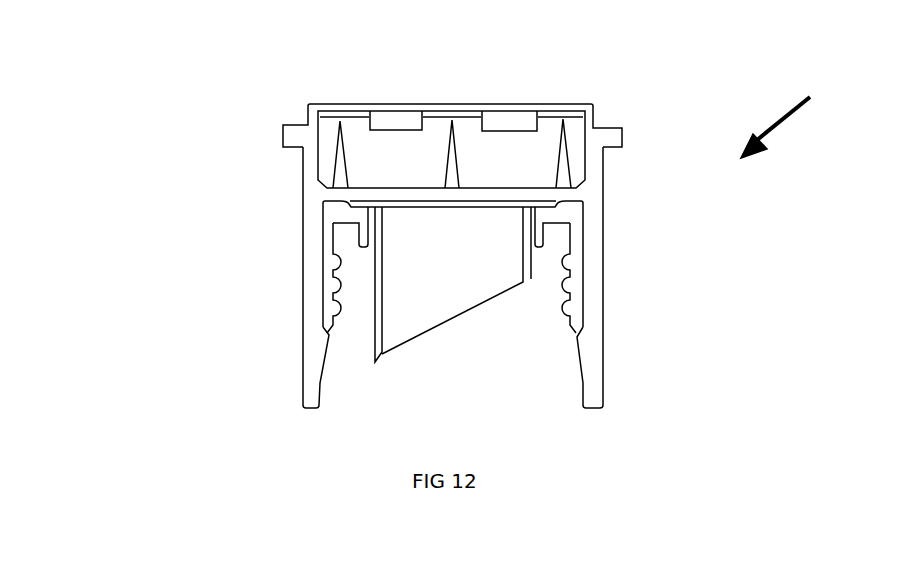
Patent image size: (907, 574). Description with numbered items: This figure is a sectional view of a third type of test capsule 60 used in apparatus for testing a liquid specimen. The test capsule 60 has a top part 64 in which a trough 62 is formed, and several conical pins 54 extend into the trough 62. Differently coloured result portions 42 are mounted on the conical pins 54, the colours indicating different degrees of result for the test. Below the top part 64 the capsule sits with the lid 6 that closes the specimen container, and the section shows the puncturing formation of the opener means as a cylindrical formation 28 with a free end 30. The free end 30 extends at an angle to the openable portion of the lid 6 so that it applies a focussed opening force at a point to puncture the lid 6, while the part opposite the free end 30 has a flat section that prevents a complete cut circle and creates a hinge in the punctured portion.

The top part 64 is at (335, 107).
The trough 62 is at (552, 124).
The result portions 42 is at (363, 112).
The conical pins 54 is at (450, 179).
The lid 6 is at (567, 271).
The cylindrical formation 28 is at (375, 333).
The free end 30 is at (383, 353).
The test capsule 60 is at (791, 118).